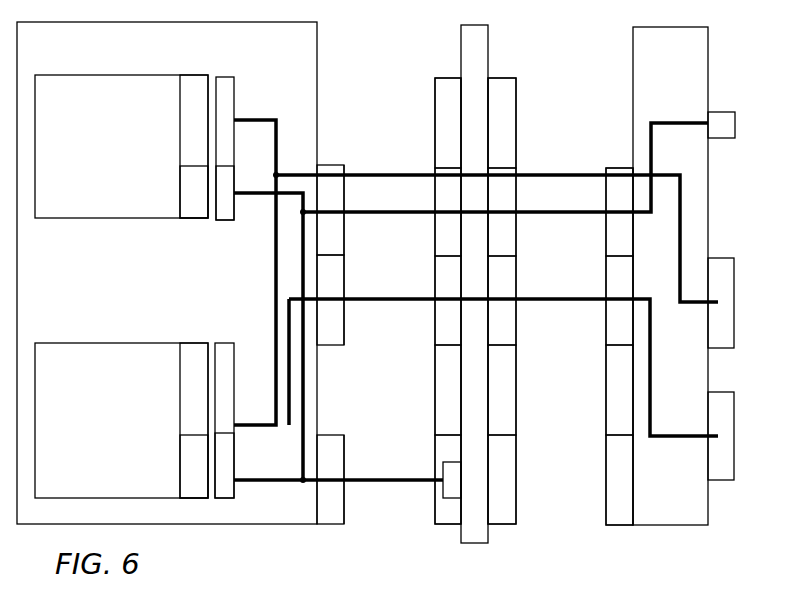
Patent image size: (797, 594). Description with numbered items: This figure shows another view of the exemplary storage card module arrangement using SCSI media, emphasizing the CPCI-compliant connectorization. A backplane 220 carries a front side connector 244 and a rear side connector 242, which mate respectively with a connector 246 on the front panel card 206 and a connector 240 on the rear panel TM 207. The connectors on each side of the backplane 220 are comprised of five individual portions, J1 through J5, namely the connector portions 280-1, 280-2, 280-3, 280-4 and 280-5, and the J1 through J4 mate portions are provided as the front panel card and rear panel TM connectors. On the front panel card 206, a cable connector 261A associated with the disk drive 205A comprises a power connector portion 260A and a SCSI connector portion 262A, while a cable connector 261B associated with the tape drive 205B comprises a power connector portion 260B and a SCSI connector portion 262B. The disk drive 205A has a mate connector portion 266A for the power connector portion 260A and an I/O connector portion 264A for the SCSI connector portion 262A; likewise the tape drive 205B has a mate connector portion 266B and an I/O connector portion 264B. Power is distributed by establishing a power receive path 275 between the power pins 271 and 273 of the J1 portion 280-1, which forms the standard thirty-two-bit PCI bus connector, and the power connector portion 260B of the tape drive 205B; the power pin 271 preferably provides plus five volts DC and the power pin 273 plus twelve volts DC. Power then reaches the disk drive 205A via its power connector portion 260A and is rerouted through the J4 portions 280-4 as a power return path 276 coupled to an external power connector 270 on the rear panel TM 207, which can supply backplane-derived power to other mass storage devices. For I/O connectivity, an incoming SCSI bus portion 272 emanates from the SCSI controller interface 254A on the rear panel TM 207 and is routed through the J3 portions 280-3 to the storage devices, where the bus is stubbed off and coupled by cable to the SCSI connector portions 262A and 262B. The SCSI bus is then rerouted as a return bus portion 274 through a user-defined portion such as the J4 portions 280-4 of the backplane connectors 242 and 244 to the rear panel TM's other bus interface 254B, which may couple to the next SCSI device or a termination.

The front panel card 206 is at (66, 325).
The disk drive 205A is at (86, 189).
The tape drive 205B is at (86, 445).
The I/O connector portion 264A is at (189, 78).
The I/O connector portion 264B is at (188, 343).
The mate connector portion 266A is at (188, 218).
The mate connector portion 266B is at (183, 462).
The SCSI connector portion 262A is at (223, 78).
The SCSI connector portion 262B is at (226, 343).
The power connector portion 260A is at (225, 221).
The power connector portion 260B is at (228, 500).
The cable connector 261A is at (236, 97).
The cable connector 261B is at (235, 492).
The power receive path 275 is at (260, 477).
The power pin 273 is at (443, 465).
The power pin 271 is at (453, 500).
The front panel card connector 246 is at (330, 527).
The backplane 220 is at (489, 41).
The front side connector 244 is at (446, 77).
The rear side connector 242 is at (500, 529).
The rear panel TM connector 240 is at (620, 529).
The J5 connector portion 280-5 is at (437, 112).
The J4 connector portion 280-4 is at (437, 243).
The J3 connector portion 280-3 is at (346, 293).
The J2 connector portion 280-2 is at (437, 383).
The J1 connector portion 280-1 is at (332, 435).
The rear panel TM 207 is at (678, 527).
The external power connector 270 is at (728, 111).
The SCSI controller interface 254A is at (721, 483).
The bus interface 254B is at (718, 258).
The power return path 276 is at (670, 122).
The signal trace to connector 254B 274 is at (678, 305).
The incoming SCSI bus portion 272 is at (668, 433).